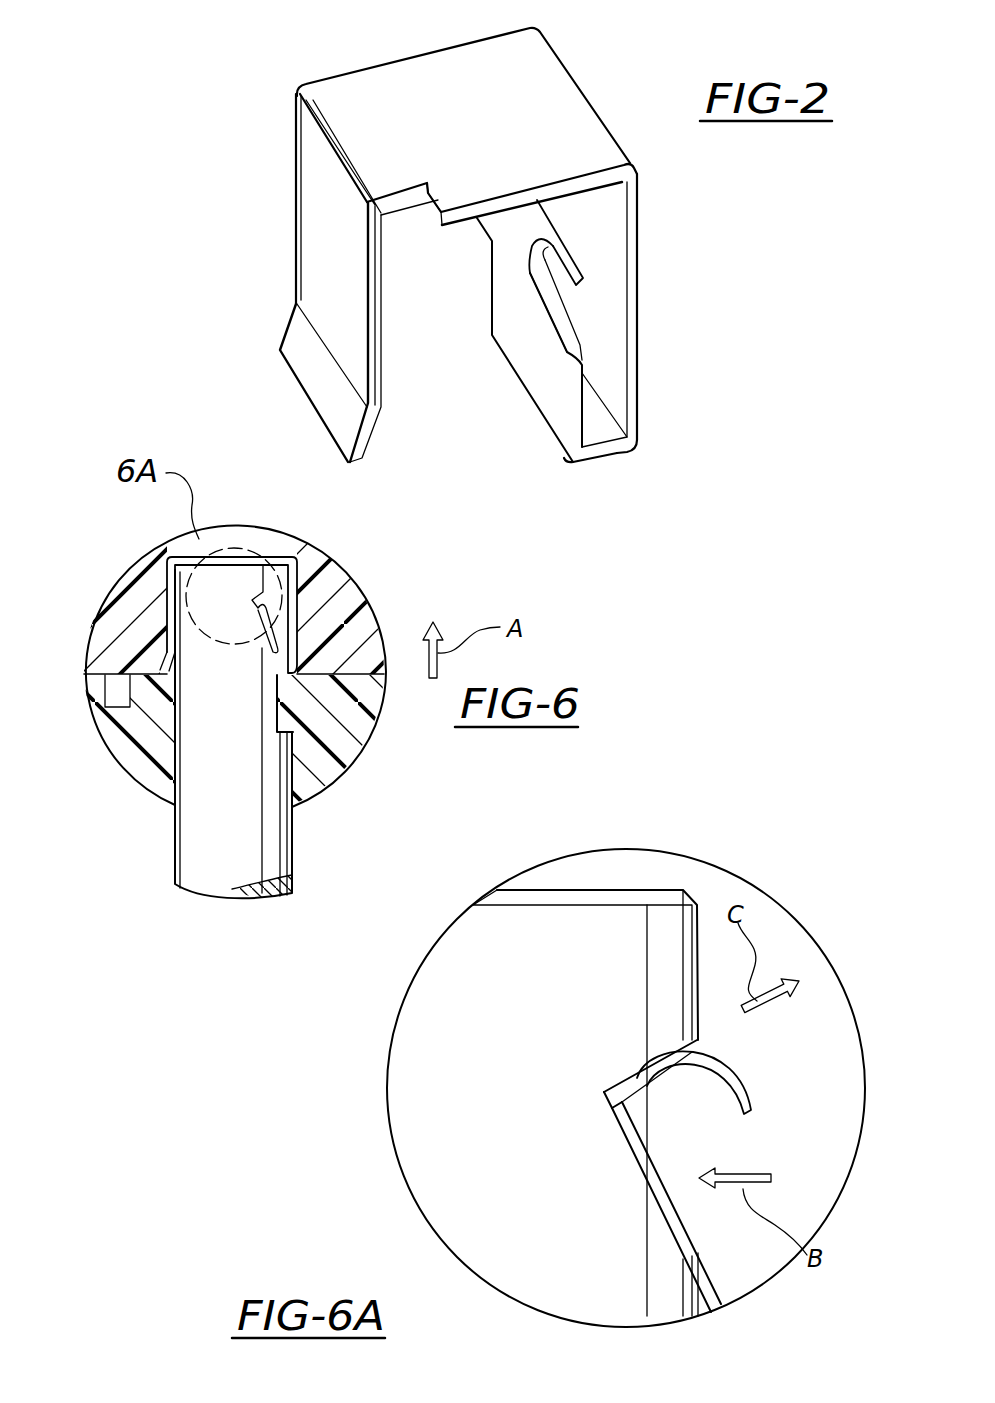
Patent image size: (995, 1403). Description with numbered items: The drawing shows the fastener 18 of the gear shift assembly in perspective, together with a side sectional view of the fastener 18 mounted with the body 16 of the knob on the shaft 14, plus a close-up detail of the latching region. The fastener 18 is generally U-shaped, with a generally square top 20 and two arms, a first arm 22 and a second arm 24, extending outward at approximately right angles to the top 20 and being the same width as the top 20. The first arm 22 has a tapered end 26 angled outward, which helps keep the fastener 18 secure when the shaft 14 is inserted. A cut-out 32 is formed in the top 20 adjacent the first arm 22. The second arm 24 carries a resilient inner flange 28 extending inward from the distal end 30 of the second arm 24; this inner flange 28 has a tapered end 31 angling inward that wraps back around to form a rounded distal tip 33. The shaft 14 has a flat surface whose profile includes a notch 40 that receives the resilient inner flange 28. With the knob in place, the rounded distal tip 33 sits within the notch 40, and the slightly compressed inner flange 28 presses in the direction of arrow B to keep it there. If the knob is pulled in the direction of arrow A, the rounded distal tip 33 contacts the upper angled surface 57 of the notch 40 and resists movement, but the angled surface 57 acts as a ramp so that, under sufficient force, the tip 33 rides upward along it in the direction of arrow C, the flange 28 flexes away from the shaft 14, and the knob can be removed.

In FIG. 6, the shaft 14 is at (186, 825).
In FIG. 6A, the shaft 14 is at (524, 1044).
In FIG. 6, the body 16 is at (385, 600).
In FIG. 2, the fastener 18 is at (236, 265).
In FIG. 6, the fastener 18 is at (302, 554).
In FIG. 2, the top 20 is at (363, 87).
In FIG. 2, the first arm 22 is at (307, 232).
In FIG. 2, the second arm 24 is at (648, 326).
In FIG. 2, the tapered end 26 is at (368, 447).
In FIG. 2, the resilient inner flange 28 is at (537, 382).
In FIG. 2, the distal end 30 is at (620, 455).
In FIG. 2, the tapered end 31 is at (527, 291).
In FIG. 6A, the tapered end 31 is at (703, 1255).
In FIG. 2, the cut-out 32 is at (418, 207).
In FIG. 2, the rounded distal tip 33 is at (547, 237).
In FIG. 6A, the rounded distal tip 33 is at (672, 1066).
In FIG. 6A, the notch 40 is at (612, 1108).
In FIG. 6A, the upper angled surface 57 is at (690, 1052).